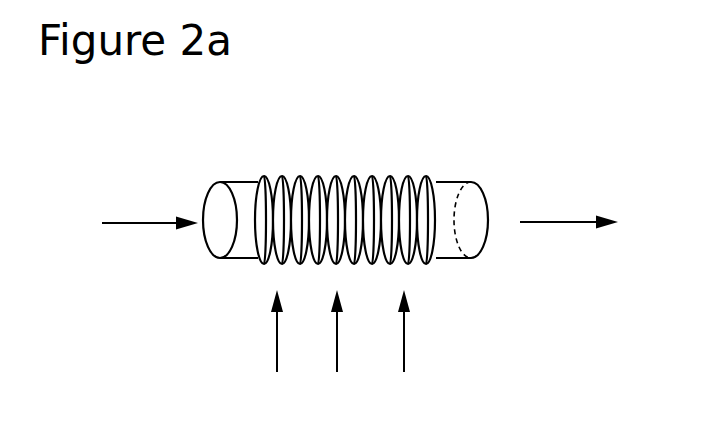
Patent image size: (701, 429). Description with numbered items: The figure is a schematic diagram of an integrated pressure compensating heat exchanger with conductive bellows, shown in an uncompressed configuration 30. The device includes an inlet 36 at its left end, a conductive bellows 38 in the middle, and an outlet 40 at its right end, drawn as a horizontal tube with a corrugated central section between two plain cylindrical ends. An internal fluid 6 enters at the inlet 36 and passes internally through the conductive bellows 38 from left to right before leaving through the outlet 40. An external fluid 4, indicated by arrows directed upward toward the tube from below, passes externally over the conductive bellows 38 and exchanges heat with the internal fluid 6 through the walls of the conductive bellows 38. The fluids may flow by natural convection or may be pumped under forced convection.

The external fluid 4 is at (340, 354).
The internal fluid 6 is at (139, 223).
The uncompressed configuration 30 is at (162, 177).
The inlet 36 is at (224, 182).
The conductive bellows 38 is at (333, 174).
The outlet 40 is at (447, 181).